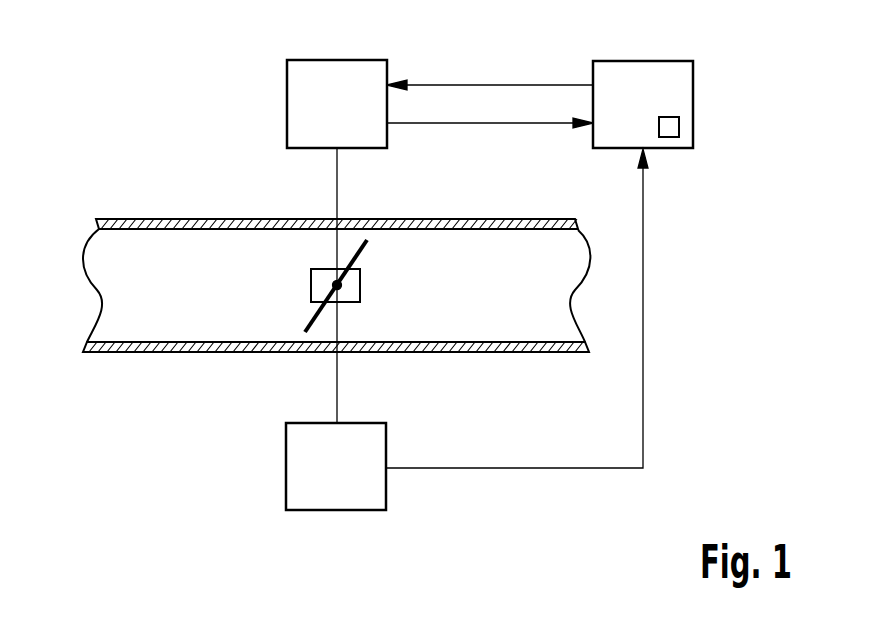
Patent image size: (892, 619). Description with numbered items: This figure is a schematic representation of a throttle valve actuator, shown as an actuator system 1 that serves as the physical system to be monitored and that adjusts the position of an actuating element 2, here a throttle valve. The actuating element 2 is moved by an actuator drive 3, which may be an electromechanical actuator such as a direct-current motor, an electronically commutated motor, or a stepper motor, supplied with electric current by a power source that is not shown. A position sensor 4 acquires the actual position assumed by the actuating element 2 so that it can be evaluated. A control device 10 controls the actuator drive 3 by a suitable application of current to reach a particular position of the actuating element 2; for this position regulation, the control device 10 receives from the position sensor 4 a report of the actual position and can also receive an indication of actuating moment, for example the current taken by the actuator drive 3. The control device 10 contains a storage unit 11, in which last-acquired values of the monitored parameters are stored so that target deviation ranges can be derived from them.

The actuator system 1 is at (96, 52).
The actuating element 2 is at (367, 240).
The actuator drive 3 is at (287, 103).
The position sensor 4 is at (286, 466).
The control device 10 is at (693, 85).
The storage unit 11 is at (679, 127).